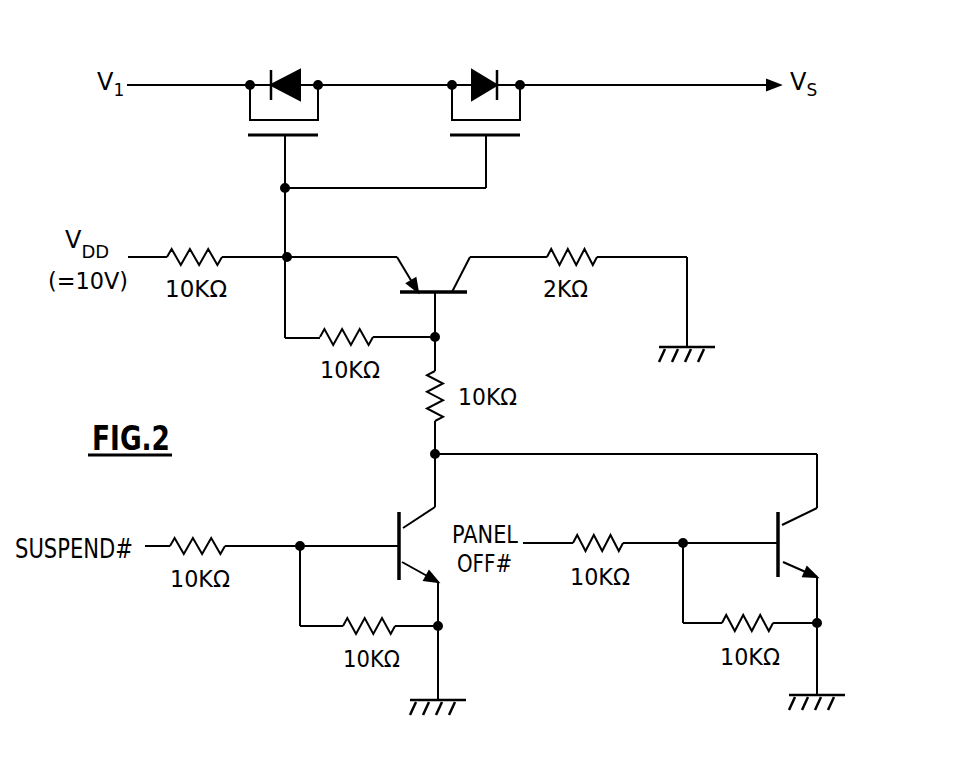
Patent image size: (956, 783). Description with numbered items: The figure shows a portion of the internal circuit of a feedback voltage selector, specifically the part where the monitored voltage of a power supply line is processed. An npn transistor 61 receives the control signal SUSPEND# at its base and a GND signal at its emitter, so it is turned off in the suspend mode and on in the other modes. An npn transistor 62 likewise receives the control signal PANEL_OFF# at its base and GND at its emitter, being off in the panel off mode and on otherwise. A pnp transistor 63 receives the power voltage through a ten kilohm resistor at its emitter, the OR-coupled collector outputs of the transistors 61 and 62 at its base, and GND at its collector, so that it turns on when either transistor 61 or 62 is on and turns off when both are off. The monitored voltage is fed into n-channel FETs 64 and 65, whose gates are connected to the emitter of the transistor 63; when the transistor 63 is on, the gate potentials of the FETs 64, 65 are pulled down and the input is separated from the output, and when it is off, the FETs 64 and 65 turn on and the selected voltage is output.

The npn transistor 61 is at (390, 508).
The npn transistor 62 is at (803, 530).
The pnp transistor 63 is at (447, 245).
The n-channel FET 64 is at (283, 63).
The n-channel FET 65 is at (485, 63).